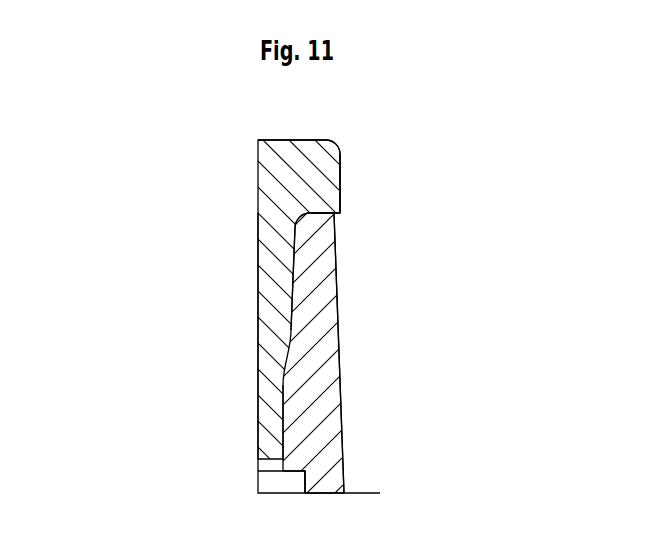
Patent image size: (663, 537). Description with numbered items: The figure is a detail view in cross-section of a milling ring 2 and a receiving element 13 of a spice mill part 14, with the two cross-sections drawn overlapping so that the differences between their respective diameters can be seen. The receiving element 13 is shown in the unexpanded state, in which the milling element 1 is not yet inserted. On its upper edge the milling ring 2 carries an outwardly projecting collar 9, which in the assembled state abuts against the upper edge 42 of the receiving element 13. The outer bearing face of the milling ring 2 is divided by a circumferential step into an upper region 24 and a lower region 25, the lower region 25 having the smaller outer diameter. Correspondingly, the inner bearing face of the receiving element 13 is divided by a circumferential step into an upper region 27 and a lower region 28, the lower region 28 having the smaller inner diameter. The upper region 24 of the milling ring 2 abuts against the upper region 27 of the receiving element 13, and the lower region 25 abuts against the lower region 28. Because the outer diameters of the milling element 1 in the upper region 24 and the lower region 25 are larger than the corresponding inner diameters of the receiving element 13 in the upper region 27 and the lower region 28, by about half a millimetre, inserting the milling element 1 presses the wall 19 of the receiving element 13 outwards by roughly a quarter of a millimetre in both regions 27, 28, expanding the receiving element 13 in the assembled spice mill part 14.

The milling element 1 is at (258, 192).
The milling ring 2 is at (312, 158).
The collar 9 is at (327, 188).
The upper edge of the receiving element 42 is at (320, 216).
The upper region of the receiving element 27 is at (306, 276).
The upper region of the milling ring 24 is at (268, 277).
The lower region of the milling ring 25 is at (268, 418).
The spice mill part 14 is at (318, 315).
The receiving element 13 is at (325, 351).
The wall of the receiving element 19 is at (307, 421).
The lower region of the receiving element 28 is at (308, 432).